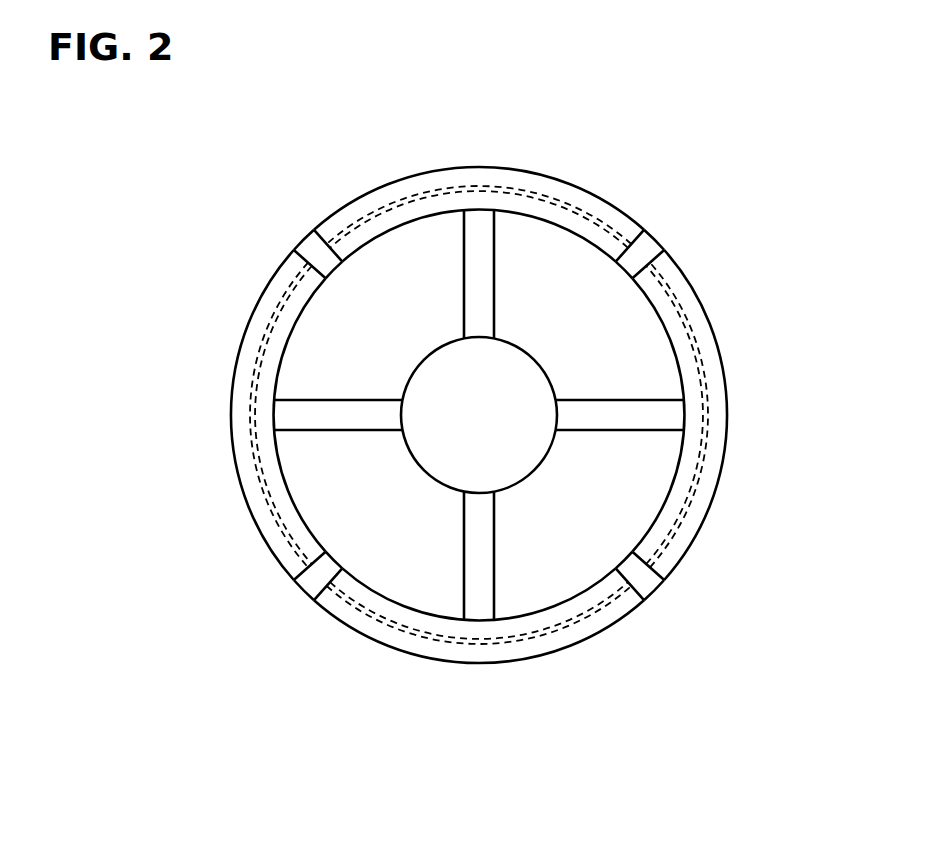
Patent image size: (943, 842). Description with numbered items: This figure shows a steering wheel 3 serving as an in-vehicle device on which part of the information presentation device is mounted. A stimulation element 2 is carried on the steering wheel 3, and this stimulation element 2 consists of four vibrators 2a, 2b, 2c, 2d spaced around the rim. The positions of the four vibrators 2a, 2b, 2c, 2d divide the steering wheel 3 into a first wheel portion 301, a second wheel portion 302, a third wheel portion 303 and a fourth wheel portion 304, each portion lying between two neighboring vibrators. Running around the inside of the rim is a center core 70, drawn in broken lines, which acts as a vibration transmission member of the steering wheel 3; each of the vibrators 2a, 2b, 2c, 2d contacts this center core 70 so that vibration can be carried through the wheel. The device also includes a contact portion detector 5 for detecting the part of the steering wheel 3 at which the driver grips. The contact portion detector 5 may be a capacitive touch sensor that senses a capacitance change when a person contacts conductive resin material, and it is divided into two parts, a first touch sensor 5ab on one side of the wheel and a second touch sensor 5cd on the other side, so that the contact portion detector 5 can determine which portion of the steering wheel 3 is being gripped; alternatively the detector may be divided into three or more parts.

The stimulation element 2 is at (483, 399).
The vibrator 2a is at (665, 248).
The vibrator 2b is at (652, 582).
The vibrator 2c is at (300, 235).
The vibrator 2d is at (307, 585).
The steering wheel 3 is at (474, 391).
The first wheel portion 301 is at (510, 168).
The second wheel portion 302 is at (708, 313).
The third wheel portion 303 is at (518, 660).
The fourth wheel portion 304 is at (243, 320).
The contact portion detector 5 is at (479, 415).
The first touch sensor 5ab is at (692, 532).
The second touch sensor 5cd is at (237, 432).
The center core 70 is at (479, 415).